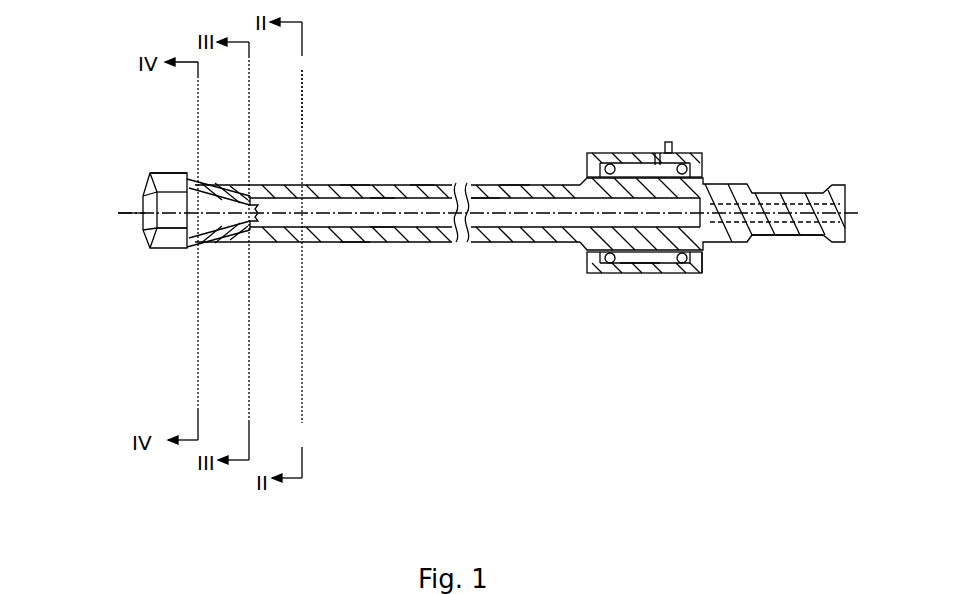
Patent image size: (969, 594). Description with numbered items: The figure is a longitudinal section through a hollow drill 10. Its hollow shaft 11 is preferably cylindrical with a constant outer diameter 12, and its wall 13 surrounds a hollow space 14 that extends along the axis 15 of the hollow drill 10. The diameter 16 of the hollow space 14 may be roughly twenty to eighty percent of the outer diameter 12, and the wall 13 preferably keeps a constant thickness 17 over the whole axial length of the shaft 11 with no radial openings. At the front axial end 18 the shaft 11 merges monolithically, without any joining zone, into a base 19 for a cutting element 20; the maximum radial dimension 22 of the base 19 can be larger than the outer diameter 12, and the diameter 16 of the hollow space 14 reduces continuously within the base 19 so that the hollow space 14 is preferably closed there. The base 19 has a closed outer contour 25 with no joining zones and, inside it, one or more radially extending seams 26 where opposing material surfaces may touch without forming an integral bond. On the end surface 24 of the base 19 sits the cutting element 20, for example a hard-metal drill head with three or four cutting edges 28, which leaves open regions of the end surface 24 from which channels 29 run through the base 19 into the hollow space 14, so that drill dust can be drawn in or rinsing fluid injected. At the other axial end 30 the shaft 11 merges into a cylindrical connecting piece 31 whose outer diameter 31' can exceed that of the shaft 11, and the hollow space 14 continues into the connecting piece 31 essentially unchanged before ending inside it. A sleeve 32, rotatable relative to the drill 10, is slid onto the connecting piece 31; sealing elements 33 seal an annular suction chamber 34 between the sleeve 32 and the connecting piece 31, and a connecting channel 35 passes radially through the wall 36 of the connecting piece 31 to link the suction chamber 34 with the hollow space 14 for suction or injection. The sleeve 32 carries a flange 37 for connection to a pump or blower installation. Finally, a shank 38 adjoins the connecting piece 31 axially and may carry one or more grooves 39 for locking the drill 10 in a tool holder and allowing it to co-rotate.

The hollow drill 10 is at (132, 86).
The hollow shaft 11 is at (588, 358).
The outer diameter 12 is at (355, 140).
The wall 13 is at (509, 190).
The hollow space 14 is at (482, 203).
The axis 15 is at (133, 210).
The diameter 16 is at (382, 155).
The thickness 17 is at (422, 218).
The front axial end 18 is at (270, 130).
The base 19 is at (259, 358).
The cutting element 20 is at (175, 202).
The maximum radial dimension 22 is at (237, 137).
The end surface 24 is at (157, 237).
The closed outer contour 25 is at (207, 250).
The seams 26 is at (222, 178).
The cutting edges 28 is at (145, 176).
The channels 29 is at (195, 180).
The other axial end 30 is at (802, 126).
The connecting piece 31 is at (712, 296).
The outer diameter of the connecting piece 31' is at (620, 290).
The sleeve 32 is at (595, 268).
The sealing elements 33 is at (690, 268).
The suction chamber 34 is at (652, 262).
The connecting channel 35 is at (637, 170).
The wall 36 is at (612, 160).
The flange 37 is at (670, 142).
The shank 38 is at (848, 358).
The grooves 39 is at (798, 250).